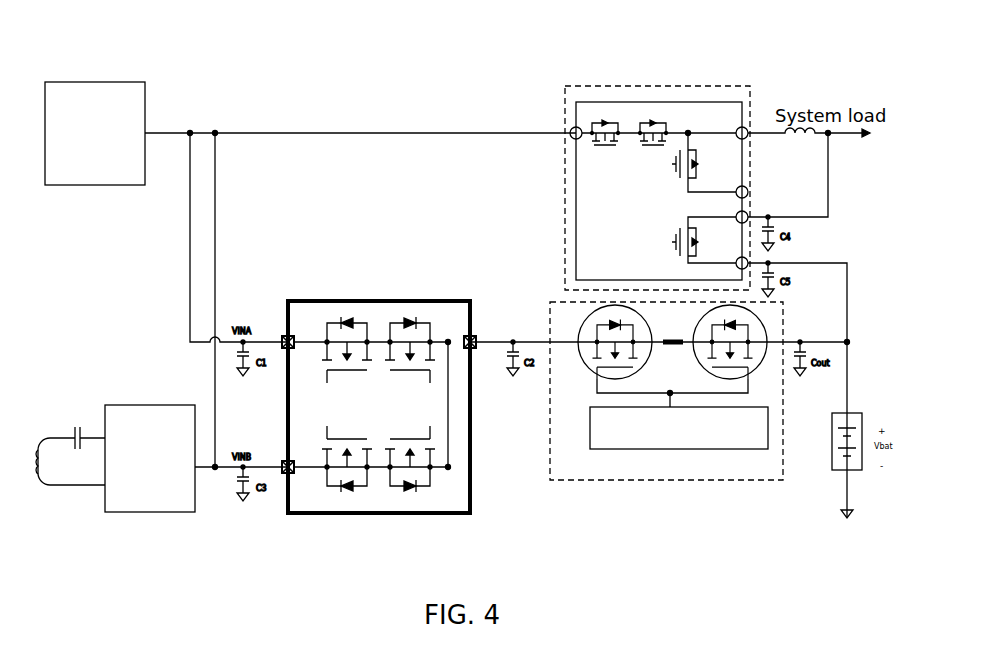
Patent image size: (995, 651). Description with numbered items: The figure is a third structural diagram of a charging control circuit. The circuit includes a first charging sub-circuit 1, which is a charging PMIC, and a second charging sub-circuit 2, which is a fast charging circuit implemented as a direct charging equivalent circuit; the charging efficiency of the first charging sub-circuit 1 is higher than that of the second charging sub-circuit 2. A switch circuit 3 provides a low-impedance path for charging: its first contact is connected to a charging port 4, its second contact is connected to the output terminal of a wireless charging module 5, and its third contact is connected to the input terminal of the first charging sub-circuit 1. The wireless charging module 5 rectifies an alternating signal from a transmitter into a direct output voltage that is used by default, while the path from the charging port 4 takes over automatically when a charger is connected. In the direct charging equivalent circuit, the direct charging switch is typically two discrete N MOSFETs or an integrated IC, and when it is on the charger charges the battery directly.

The first charging sub-circuit 1 is at (683, 481).
The second charging sub-circuit 2 is at (660, 85).
The switch circuit 3 is at (382, 300).
The charging port 4 is at (97, 81).
The wireless charging module 5 is at (143, 404).